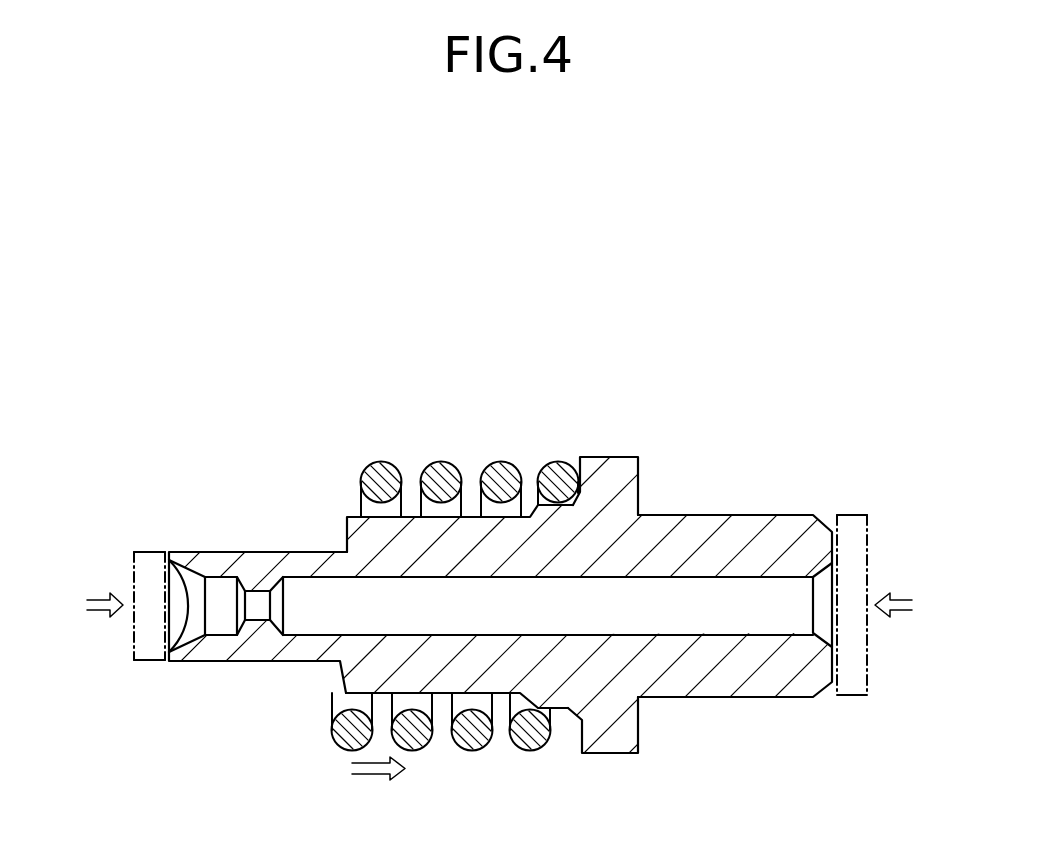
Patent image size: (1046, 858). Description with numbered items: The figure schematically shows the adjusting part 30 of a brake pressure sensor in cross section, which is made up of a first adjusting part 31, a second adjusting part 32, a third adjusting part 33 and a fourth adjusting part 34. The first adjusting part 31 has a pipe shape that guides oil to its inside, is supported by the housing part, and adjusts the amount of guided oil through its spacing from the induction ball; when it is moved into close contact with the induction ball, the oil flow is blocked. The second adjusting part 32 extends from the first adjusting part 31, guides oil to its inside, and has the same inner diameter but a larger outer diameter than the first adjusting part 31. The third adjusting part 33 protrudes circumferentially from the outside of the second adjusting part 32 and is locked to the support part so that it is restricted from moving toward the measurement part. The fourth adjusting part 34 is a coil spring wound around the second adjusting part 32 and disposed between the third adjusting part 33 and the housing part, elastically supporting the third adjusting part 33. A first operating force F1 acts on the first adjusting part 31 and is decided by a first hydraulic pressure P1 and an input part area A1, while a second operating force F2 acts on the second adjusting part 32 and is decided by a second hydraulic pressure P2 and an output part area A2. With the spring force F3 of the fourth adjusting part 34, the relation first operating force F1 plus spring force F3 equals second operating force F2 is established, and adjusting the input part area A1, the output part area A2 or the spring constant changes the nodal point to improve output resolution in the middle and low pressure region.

The adjusting part 30 is at (893, 320).
The first adjusting part 31 is at (197, 551).
The second adjusting part 32 is at (711, 518).
The third adjusting part 33 is at (612, 466).
The fourth adjusting part 34 is at (382, 470).
The first hydraulic pressure P1 is at (149, 606).
The second hydraulic pressure P2 is at (852, 605).
The input part area A1 is at (148, 662).
The output part area A2 is at (852, 697).
The first operating force F1 is at (91, 606).
The second operating force F2 is at (906, 606).
The spring force F3 is at (378, 785).